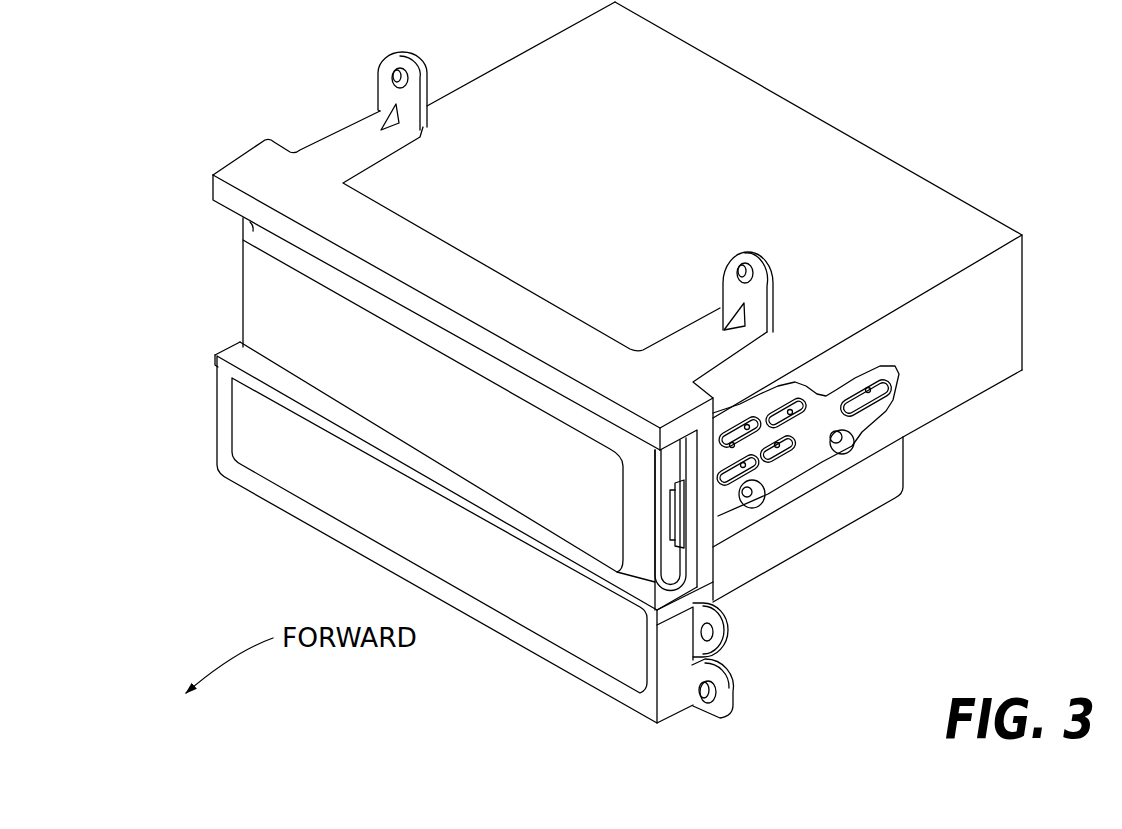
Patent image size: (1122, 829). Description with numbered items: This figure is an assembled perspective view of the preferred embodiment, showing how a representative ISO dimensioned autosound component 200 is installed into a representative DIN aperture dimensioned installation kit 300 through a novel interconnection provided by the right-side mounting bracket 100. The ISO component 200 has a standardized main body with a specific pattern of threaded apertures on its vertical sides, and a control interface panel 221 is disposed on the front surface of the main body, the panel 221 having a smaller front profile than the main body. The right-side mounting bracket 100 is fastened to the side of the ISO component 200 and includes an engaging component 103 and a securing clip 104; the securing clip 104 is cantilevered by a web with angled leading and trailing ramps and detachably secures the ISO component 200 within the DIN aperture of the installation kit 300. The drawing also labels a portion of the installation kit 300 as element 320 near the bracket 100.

The right-side mounting bracket 100 is at (812, 460).
The engaging component 103 is at (677, 567).
The securing clip 104 is at (680, 510).
The ISO component 200 is at (637, 197).
The control interface panel 221 is at (282, 427).
The installation kit 300 is at (482, 296).
The guide wall 320 is at (695, 568).